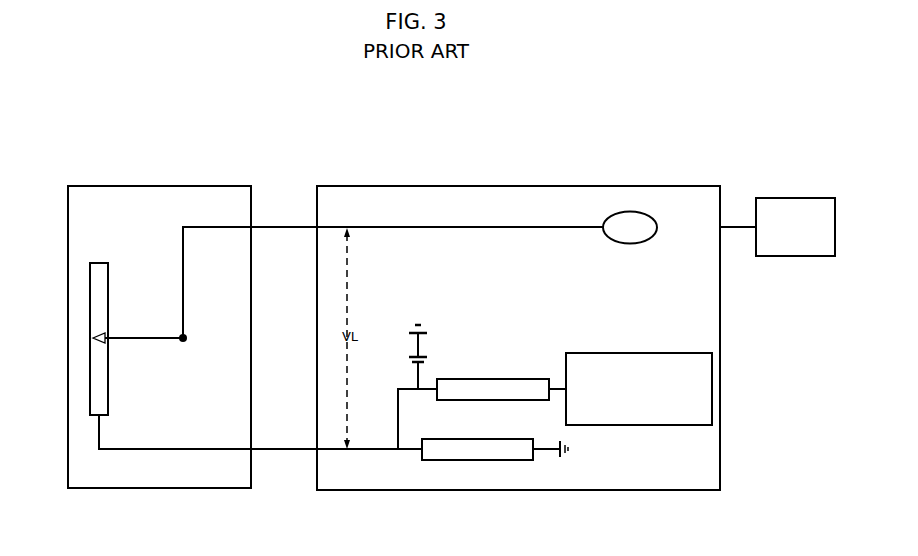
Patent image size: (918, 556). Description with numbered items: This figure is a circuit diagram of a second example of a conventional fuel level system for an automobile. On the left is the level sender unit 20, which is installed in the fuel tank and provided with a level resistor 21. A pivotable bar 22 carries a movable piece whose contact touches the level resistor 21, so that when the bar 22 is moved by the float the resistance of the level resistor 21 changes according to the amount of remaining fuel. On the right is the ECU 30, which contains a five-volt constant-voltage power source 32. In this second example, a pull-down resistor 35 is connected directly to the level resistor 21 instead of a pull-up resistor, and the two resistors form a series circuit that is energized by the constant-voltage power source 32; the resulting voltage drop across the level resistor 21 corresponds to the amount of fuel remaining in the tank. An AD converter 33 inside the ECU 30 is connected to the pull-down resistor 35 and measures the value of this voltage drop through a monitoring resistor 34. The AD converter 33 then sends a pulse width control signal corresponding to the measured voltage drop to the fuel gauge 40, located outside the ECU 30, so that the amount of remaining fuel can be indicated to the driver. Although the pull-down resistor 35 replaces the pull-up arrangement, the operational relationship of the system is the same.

The level sender unit 20 is at (162, 181).
The level resistor 21 is at (97, 383).
The pivotable bar 22 is at (140, 340).
The ECU 30 is at (385, 181).
The 5V constant-voltage power source 32 is at (630, 211).
The AD converter 33 is at (635, 425).
The monitoring resistor 34 is at (519, 400).
The pull-down resistor 35 is at (448, 460).
The fuel gauge 40 is at (793, 197).